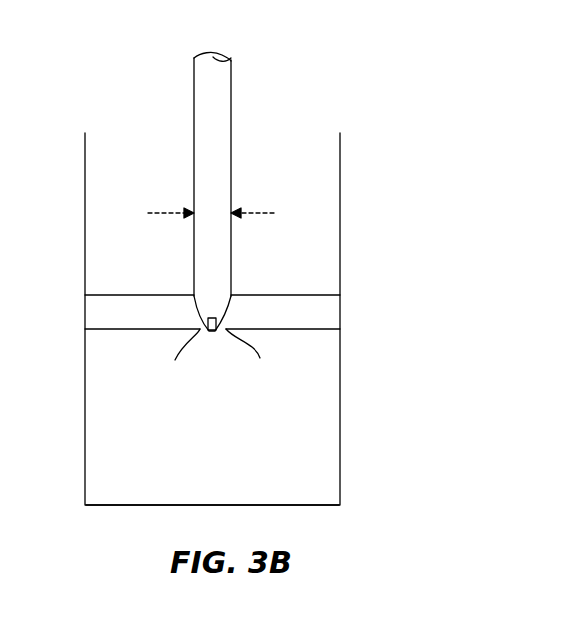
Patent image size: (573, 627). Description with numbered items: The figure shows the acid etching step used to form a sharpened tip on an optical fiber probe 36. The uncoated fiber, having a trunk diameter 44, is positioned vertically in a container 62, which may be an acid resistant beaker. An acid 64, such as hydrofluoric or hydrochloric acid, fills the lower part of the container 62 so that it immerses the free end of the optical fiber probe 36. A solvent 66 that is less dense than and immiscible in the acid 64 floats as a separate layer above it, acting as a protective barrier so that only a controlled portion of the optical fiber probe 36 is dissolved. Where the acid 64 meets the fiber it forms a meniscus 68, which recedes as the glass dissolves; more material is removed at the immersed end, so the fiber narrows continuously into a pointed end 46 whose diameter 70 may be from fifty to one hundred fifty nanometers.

The optical fiber probe 36 is at (231, 119).
The trunk diameter 44 is at (262, 213).
The pointed end 46 is at (216, 339).
The container 62 is at (340, 218).
The acid 64 is at (343, 430).
The solvent 66 is at (332, 317).
The meniscus 68 is at (219, 361).
The diameter 70 is at (214, 326).